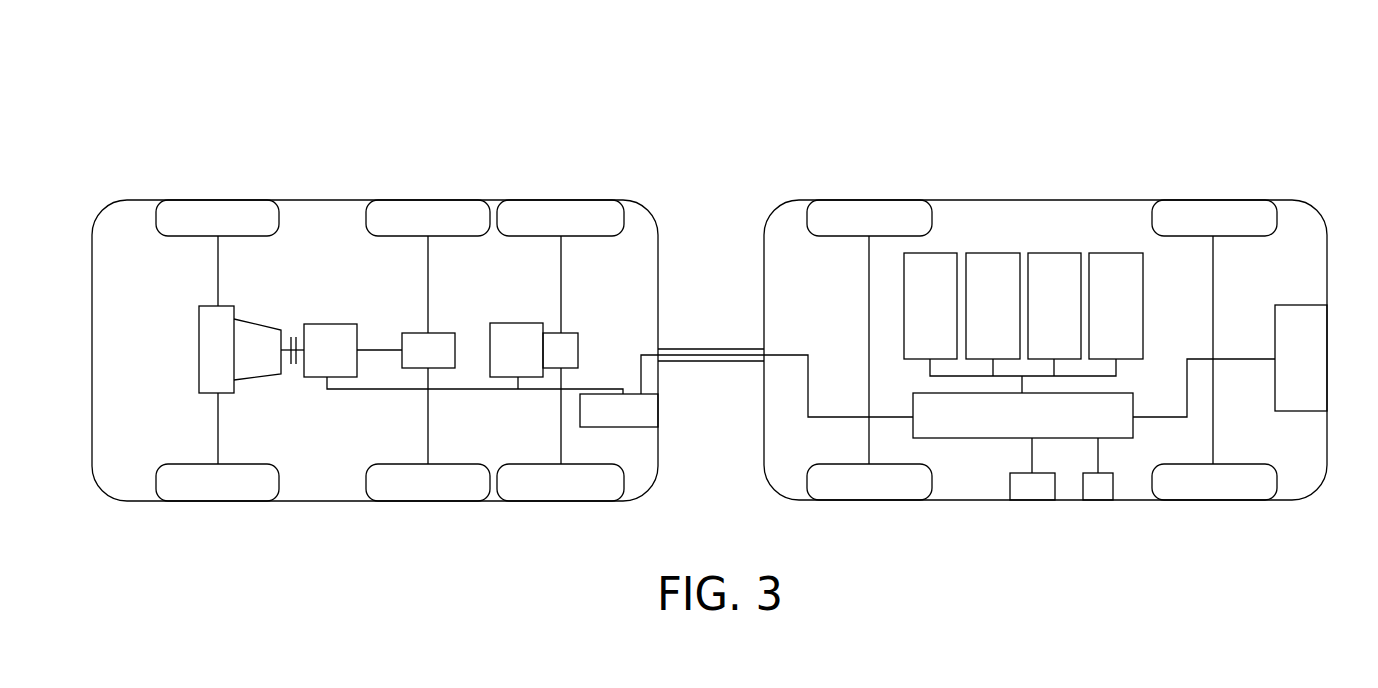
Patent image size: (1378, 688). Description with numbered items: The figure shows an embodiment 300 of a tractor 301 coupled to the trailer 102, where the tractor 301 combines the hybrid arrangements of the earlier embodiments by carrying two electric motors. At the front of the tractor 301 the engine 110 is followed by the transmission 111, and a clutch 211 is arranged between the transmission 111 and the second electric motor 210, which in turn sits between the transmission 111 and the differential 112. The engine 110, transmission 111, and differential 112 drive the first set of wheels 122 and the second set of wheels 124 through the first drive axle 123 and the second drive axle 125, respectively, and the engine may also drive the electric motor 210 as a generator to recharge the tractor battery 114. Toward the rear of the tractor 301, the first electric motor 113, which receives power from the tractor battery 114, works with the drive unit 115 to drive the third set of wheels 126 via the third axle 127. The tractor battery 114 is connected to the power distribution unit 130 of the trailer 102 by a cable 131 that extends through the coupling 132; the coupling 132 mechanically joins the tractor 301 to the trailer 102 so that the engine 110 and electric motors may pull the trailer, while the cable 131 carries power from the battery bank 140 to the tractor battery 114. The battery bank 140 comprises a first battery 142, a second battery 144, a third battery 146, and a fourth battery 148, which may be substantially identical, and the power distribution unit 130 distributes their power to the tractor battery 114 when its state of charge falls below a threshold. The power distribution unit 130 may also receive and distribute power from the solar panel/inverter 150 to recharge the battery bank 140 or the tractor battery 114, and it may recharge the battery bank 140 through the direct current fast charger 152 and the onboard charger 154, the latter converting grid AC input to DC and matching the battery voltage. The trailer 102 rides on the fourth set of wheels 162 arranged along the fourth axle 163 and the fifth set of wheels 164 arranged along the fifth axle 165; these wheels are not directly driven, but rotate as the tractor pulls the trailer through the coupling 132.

The embodiment 300 is at (1291, 57).
The tractor 301 is at (92, 230).
The trailer 102 is at (763, 230).
The engine 110 is at (199, 307).
The transmission 111 is at (253, 321).
The clutch 211 is at (296, 364).
The electric motor 210 is at (335, 324).
The differential 112 is at (408, 333).
The electric motor 113 is at (490, 323).
The drive unit 115 is at (578, 333).
The tractor battery 114 is at (608, 427).
The first set of wheels 122 is at (280, 199).
The first drive axle 123 is at (218, 438).
The second set of wheels 124 is at (489, 199).
The second drive axle 125 is at (428, 433).
The third set of wheels 126 is at (623, 199).
The third axle 127 is at (561, 437).
The cable 131 is at (687, 353).
The coupling 132 is at (722, 362).
The power distribution unit 130 is at (913, 393).
The battery bank 140 is at (1072, 225).
The first battery 142 is at (940, 253).
The second battery 144 is at (990, 253).
The third battery 146 is at (1030, 253).
The fourth battery 148 is at (1143, 290).
The solar panel/inverter 150 is at (1275, 305).
The direct current fast charger 152 is at (1032, 500).
The onboard charger 154 is at (1102, 500).
The fourth set of wheels 162 is at (807, 200).
The fourth axle 163 is at (869, 317).
The fifth set of wheels 164 is at (1273, 200).
The fifth axle 165 is at (1213, 335).